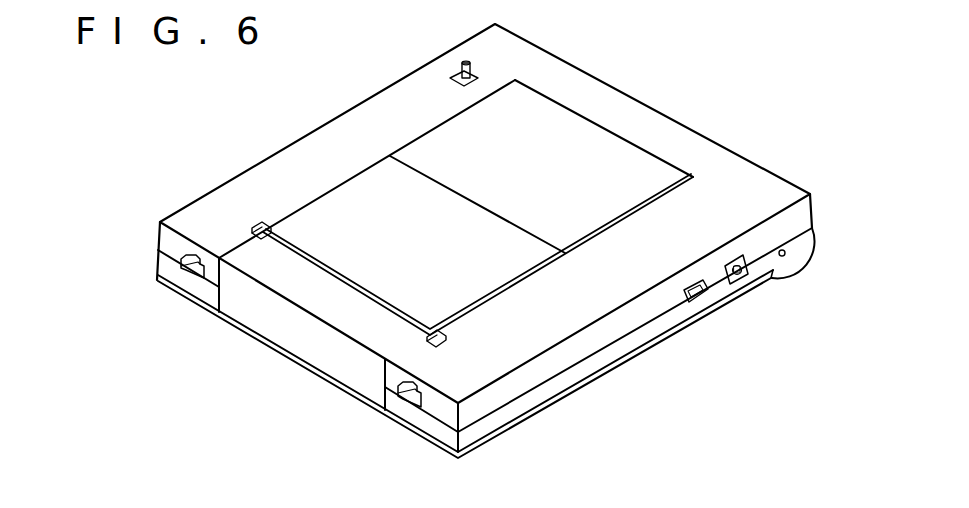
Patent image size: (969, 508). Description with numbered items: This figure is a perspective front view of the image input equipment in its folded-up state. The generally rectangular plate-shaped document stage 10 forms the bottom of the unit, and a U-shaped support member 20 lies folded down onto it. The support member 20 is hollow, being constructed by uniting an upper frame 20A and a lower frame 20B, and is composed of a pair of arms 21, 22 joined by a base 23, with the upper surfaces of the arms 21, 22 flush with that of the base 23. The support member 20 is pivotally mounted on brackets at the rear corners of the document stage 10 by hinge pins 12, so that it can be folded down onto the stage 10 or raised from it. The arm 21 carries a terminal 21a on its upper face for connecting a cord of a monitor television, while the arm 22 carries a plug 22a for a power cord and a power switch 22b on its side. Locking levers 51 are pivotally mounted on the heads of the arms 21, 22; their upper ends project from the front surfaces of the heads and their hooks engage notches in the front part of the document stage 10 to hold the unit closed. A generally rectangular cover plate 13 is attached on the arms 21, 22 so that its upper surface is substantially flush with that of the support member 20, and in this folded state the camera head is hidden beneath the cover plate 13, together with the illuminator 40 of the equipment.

The document stage 10 is at (515, 423).
The hinge pin 12 is at (783, 257).
The cover plate 13 is at (353, 195).
The U-shaped support member 20 is at (609, 76).
The upper frame 20A is at (787, 230).
The lower frame 20B is at (790, 263).
The arm 21 is at (287, 162).
The terminal 21a is at (463, 63).
The arm 22 is at (590, 313).
The plug 22a is at (740, 284).
The power switch 22b is at (693, 303).
The base 23 is at (657, 123).
The illuminator 40 is at (438, 146).
The locking lever 51 is at (195, 278).